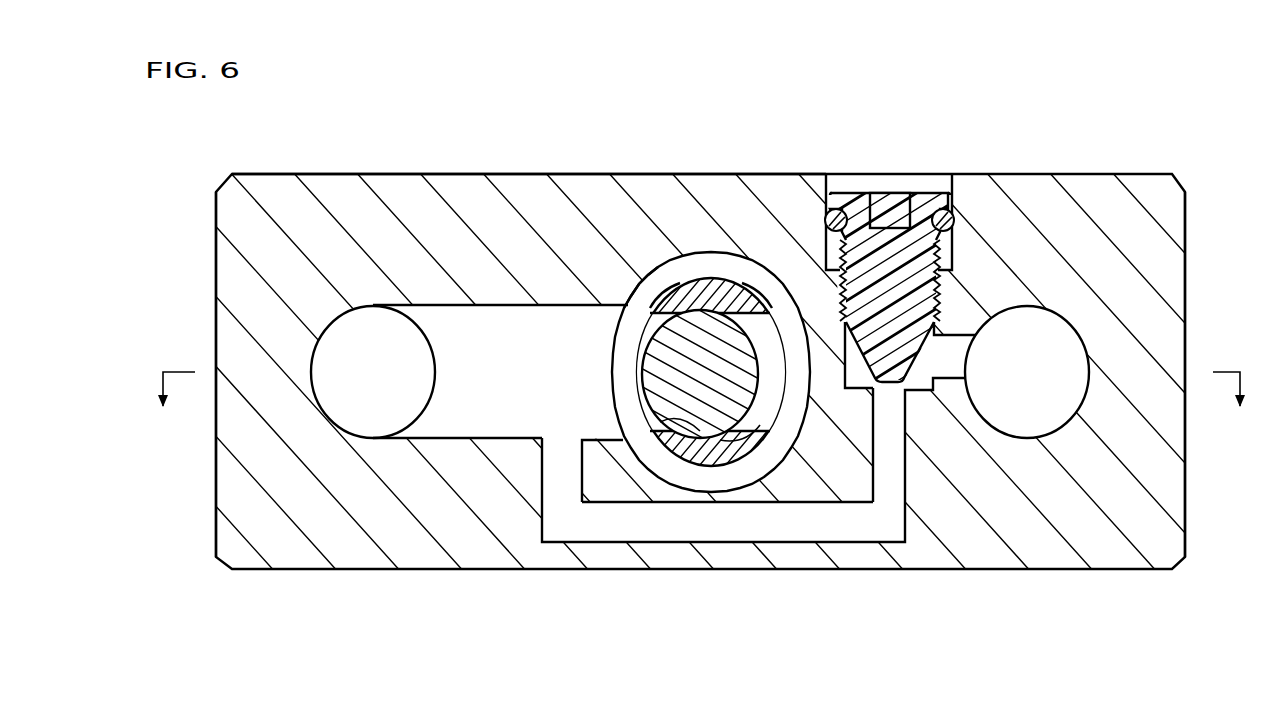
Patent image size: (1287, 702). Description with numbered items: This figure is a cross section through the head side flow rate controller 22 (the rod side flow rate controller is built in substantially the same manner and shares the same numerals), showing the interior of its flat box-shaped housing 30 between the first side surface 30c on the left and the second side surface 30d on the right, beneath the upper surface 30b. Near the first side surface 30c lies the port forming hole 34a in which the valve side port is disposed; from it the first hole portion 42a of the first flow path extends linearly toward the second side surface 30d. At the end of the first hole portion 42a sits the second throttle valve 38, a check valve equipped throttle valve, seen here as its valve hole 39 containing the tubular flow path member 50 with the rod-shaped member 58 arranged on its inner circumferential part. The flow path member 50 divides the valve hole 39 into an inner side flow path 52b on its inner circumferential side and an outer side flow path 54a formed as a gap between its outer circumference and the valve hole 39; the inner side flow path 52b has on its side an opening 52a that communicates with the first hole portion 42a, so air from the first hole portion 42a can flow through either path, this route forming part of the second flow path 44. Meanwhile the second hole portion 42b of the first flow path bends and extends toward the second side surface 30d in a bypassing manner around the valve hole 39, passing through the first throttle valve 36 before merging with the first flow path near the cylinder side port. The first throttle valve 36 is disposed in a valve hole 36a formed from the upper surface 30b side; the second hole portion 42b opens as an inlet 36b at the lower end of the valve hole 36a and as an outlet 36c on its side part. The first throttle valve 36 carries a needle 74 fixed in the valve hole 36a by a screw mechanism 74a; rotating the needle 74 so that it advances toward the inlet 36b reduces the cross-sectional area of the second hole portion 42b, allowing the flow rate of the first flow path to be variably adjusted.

The head side flow rate controller 22 is at (1158, 147).
The housing 30 is at (1078, 187).
The upper surface 30b is at (350, 173).
The first side surface 30c is at (215, 337).
The second side surface 30d is at (1187, 337).
The port forming hole 34a is at (378, 384).
The first hole portion 42a is at (481, 384).
The second hole portion 42b is at (706, 536).
The second flow path 44 is at (1033, 384).
The second throttle valve 38 is at (688, 247).
The valve hole 39 is at (666, 270).
The outer side flow path 54a is at (630, 297).
The flow path member 50 is at (708, 290).
The opening 52a is at (632, 337).
The inner side flow path 52b is at (655, 424).
The rod-shaped member 58 is at (655, 378).
The needle 74 is at (896, 246).
The screw mechanism 74a is at (840, 303).
The first throttle valve 36 is at (923, 183).
The valve hole 36a is at (864, 355).
The inlet 36b is at (898, 396).
The outlet 36c is at (942, 304).